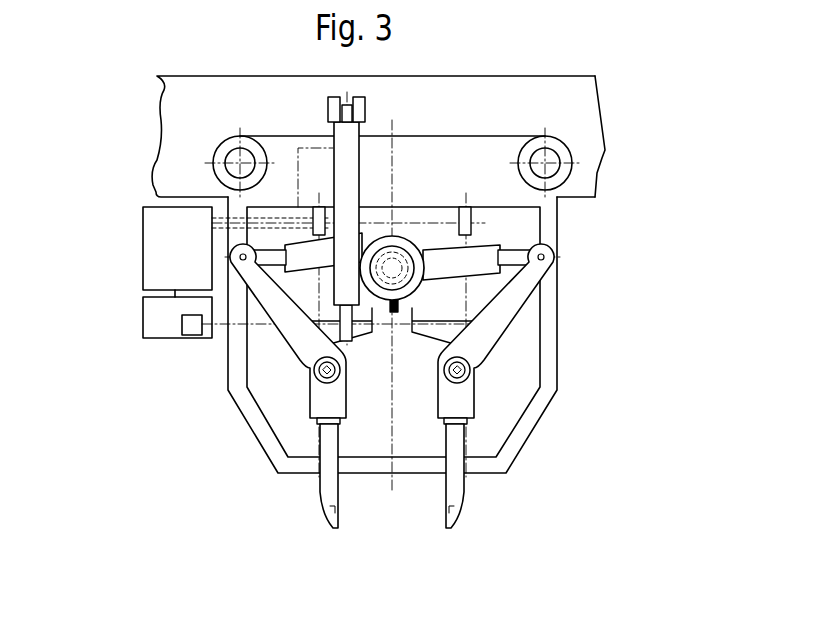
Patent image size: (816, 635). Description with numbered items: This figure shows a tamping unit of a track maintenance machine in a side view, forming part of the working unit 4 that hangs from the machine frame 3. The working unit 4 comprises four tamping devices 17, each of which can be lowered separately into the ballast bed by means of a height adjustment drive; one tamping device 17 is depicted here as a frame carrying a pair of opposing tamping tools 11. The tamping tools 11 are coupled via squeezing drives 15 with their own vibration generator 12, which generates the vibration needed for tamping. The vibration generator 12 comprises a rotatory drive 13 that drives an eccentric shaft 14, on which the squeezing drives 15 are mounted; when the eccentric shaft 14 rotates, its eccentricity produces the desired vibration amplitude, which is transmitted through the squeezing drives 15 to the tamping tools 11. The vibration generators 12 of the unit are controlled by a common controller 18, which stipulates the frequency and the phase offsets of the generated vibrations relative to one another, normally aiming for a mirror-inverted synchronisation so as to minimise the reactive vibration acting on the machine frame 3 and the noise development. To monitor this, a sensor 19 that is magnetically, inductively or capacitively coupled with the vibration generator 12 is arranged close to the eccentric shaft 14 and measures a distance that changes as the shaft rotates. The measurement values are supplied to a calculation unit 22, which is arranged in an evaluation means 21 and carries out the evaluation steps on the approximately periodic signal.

The machine frame 3 is at (190, 92).
The working unit 4 is at (658, 149).
The tamping tools 11 is at (333, 393).
The vibration generator 12 is at (383, 312).
The rotatory drive 13 is at (415, 248).
The eccentric shaft 14 is at (410, 283).
The squeezing drives 15 is at (288, 247).
The tamping device 17 is at (571, 359).
The controller 18 is at (160, 240).
The sensor 19 is at (397, 313).
The evaluation means 21 is at (150, 307).
The calculation unit 22 is at (193, 338).